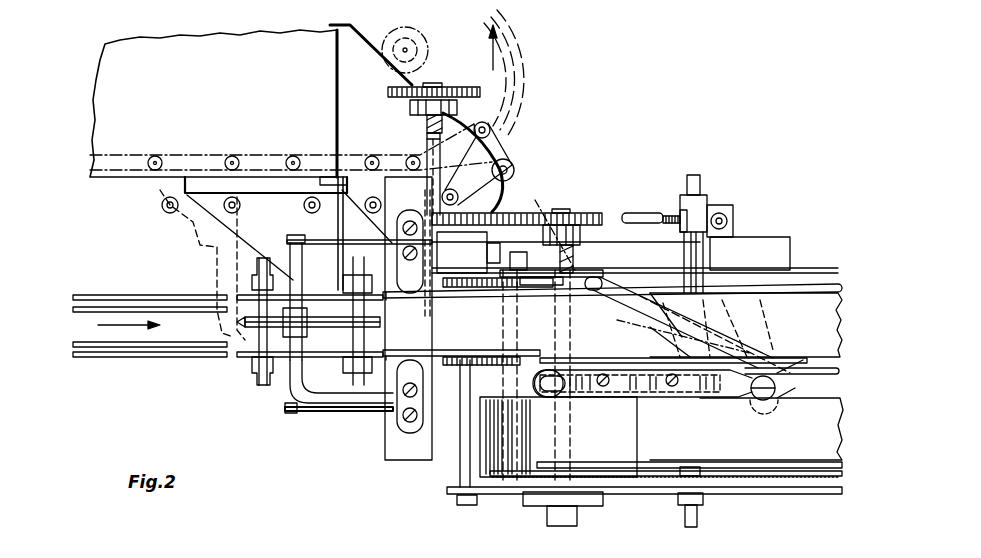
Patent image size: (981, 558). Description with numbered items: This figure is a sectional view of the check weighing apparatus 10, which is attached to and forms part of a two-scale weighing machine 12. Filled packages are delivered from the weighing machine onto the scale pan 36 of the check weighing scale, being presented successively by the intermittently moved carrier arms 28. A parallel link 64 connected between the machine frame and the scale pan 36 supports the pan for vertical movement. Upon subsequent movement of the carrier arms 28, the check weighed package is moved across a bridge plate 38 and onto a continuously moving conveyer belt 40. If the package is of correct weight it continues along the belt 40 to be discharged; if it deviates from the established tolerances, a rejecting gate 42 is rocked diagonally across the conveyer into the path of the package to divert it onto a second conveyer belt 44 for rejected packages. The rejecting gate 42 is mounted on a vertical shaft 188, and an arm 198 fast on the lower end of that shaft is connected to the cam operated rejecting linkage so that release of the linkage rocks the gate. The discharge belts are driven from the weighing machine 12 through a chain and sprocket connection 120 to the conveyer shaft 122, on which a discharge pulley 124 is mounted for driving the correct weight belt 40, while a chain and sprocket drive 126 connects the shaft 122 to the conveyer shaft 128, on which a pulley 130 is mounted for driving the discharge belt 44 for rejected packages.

The check weighing apparatus 10 is at (640, 158).
The two-scale weighing machine 12 is at (537, 77).
The carrier arms 28 is at (217, 270).
The scale pan 36 is at (262, 324).
The bridge plate 38 is at (408, 318).
The conveyer belt 40 is at (746, 325).
The rejecting gate 42 is at (700, 397).
The second conveyer belt 44 is at (746, 429).
The parallel link 64 is at (317, 240).
The chain and sprocket connection 120 is at (357, 87).
The conveyer shaft 122 is at (427, 140).
The discharge pulley 124 is at (480, 358).
The chain and sprocket drive 126 is at (520, 200).
The conveyer shaft 128 is at (570, 262).
The pulley 130 is at (517, 480).
The vertical shaft 188 is at (768, 400).
The arm 198 is at (747, 266).